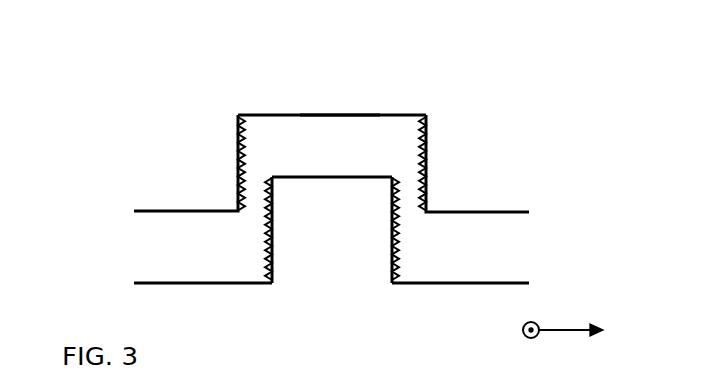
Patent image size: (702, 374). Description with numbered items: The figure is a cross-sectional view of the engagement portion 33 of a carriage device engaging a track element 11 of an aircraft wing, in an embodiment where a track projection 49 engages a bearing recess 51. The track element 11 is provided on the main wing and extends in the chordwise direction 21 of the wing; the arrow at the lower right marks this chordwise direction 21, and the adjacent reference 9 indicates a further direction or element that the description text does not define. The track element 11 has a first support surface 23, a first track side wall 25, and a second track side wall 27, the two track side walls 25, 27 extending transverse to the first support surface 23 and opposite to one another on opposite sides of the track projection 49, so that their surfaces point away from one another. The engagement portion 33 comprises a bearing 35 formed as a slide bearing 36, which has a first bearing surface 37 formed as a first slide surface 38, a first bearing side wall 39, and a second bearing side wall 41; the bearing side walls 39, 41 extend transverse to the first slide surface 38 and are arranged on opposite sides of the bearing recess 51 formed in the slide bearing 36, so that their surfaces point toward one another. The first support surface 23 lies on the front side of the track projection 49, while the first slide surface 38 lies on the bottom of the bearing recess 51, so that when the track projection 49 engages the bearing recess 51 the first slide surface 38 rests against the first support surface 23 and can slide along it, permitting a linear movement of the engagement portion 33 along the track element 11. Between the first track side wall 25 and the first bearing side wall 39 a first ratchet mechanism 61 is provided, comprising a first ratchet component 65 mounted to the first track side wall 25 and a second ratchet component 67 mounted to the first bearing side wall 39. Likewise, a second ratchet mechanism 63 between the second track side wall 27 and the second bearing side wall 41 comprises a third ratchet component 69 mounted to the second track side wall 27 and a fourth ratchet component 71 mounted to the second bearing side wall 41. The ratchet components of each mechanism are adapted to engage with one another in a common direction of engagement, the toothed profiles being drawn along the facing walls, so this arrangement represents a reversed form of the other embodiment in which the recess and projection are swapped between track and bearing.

The axial direction 9 is at (560, 330).
The track element 11 is at (345, 331).
The chordwise direction 21 is at (522, 330).
The first support surface 23 is at (344, 212).
The first track side wall 25 is at (273, 205).
The second track side wall 27 is at (391, 204).
The engagement portion 33 is at (479, 162).
The bearing 35 is at (479, 162).
The slide bearing 36 is at (479, 162).
The first bearing surface 37 is at (340, 89).
The first slide surface 38 is at (340, 114).
The first bearing side wall 39 is at (189, 163).
The second bearing side wall 41 is at (479, 162).
The track projection 49 is at (332, 216).
The bearing recess 51 is at (344, 152).
The first ratchet mechanism 61 is at (255, 156).
The second ratchet mechanism 63 is at (405, 158).
The first ratchet component 65 is at (237, 255).
The second ratchet component 67 is at (238, 157).
The third ratchet component 69 is at (428, 255).
The fourth ratchet component 71 is at (539, 140).